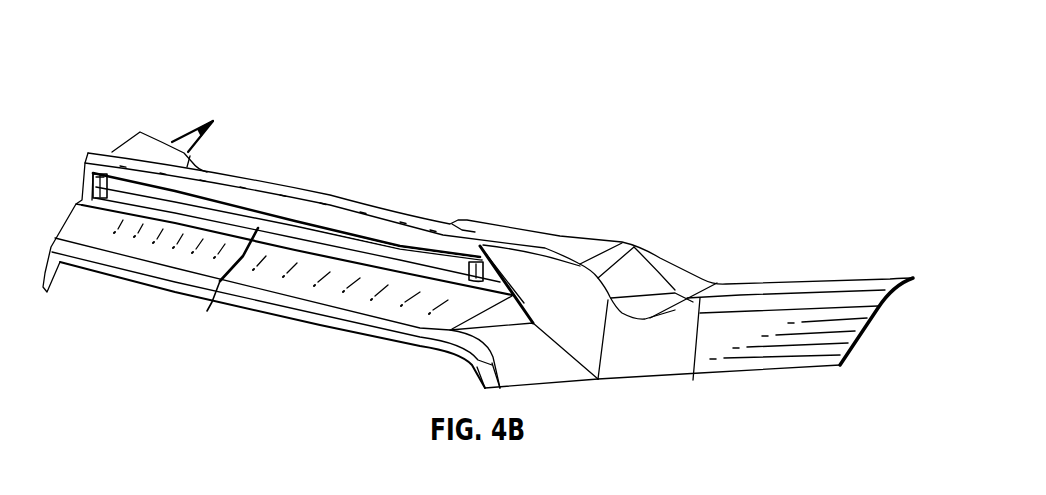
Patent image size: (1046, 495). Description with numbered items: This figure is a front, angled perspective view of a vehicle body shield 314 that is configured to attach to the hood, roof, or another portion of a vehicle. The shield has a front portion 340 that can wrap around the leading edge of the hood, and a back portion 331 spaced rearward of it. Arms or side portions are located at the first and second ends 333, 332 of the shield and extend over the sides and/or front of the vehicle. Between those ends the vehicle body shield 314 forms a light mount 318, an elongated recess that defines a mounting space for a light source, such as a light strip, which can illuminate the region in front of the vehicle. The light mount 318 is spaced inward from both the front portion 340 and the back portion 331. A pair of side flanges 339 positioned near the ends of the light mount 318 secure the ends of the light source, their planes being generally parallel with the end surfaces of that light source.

The vehicle body shield 314 is at (527, 159).
The light mount 318 is at (278, 216).
The back portion 331 is at (576, 250).
The second end 332 is at (862, 338).
The first end 333 is at (184, 105).
The side flanges 339 is at (108, 152).
The front portion 340 is at (180, 288).